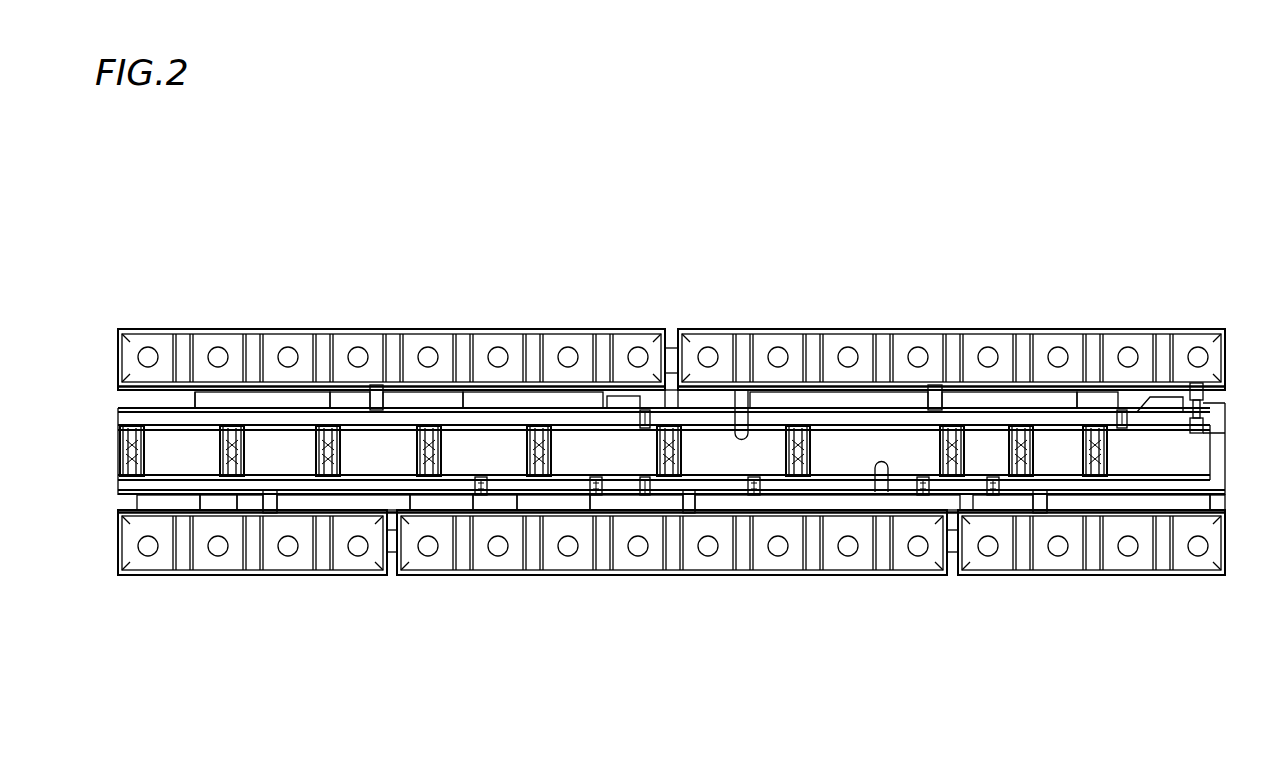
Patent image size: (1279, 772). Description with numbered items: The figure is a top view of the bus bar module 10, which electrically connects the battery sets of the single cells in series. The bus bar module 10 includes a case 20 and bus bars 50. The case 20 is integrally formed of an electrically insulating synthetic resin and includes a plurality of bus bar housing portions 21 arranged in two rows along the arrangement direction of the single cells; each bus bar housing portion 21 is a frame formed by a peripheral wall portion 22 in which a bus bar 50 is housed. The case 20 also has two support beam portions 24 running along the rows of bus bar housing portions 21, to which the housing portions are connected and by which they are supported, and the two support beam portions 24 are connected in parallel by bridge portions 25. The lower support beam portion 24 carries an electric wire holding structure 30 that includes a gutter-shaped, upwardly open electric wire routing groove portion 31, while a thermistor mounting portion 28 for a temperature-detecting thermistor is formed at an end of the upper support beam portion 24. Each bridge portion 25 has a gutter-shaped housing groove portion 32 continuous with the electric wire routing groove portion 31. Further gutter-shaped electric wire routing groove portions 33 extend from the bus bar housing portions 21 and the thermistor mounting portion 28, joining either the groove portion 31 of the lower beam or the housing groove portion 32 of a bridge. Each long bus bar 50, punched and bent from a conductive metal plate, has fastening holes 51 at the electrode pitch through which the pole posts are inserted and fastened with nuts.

The bus bar module 10 is at (1072, 222).
The case 20 is at (1172, 318).
The bus bar housing portion 21 is at (487, 328).
The peripheral wall portion 22 is at (112, 576).
The support beam portion 24 is at (853, 408).
The bridge portion 25 is at (470, 425).
The thermistor mounting portion 28 is at (1205, 400).
The electric wire holding structure 30 is at (648, 408).
The electric wire routing groove portion 31 is at (671, 449).
The housing groove portion 32 is at (425, 448).
The electric wire routing groove portion 33 is at (370, 406).
The bus bar 50 is at (580, 330).
The fastening hole 51 is at (218, 357).